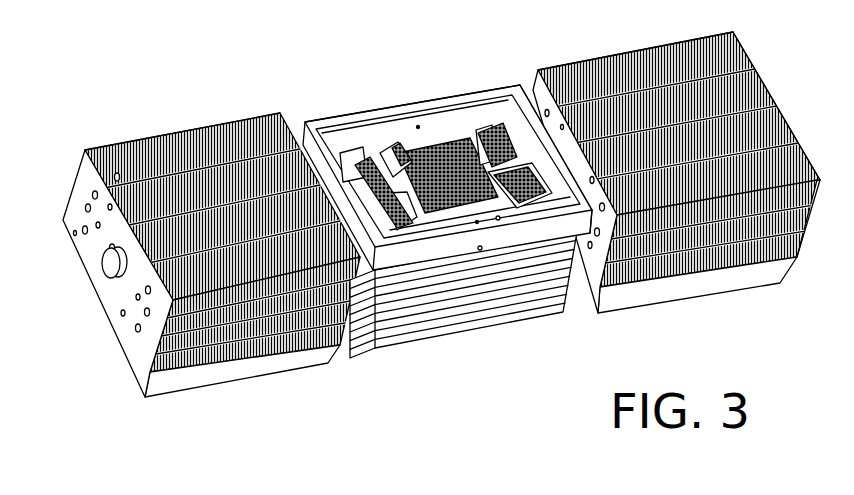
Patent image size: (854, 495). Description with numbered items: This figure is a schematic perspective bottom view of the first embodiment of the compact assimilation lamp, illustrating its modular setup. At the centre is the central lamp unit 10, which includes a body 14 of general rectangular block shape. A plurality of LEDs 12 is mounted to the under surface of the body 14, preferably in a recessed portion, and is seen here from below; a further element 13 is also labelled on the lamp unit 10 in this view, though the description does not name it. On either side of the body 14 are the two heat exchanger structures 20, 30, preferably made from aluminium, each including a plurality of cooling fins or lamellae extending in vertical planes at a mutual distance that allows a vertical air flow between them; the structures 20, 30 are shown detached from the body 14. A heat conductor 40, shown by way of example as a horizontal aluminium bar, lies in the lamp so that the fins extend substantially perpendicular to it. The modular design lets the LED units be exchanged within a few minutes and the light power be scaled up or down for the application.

The central lamp unit 10 is at (447, 228).
The LEDs 12 is at (500, 128).
The tray base plate 13 is at (505, 110).
The body 14 is at (497, 277).
The heat exchanger structure 20 is at (732, 322).
The heat exchanger structure 30 is at (257, 407).
The heat conductor 40 is at (105, 268).